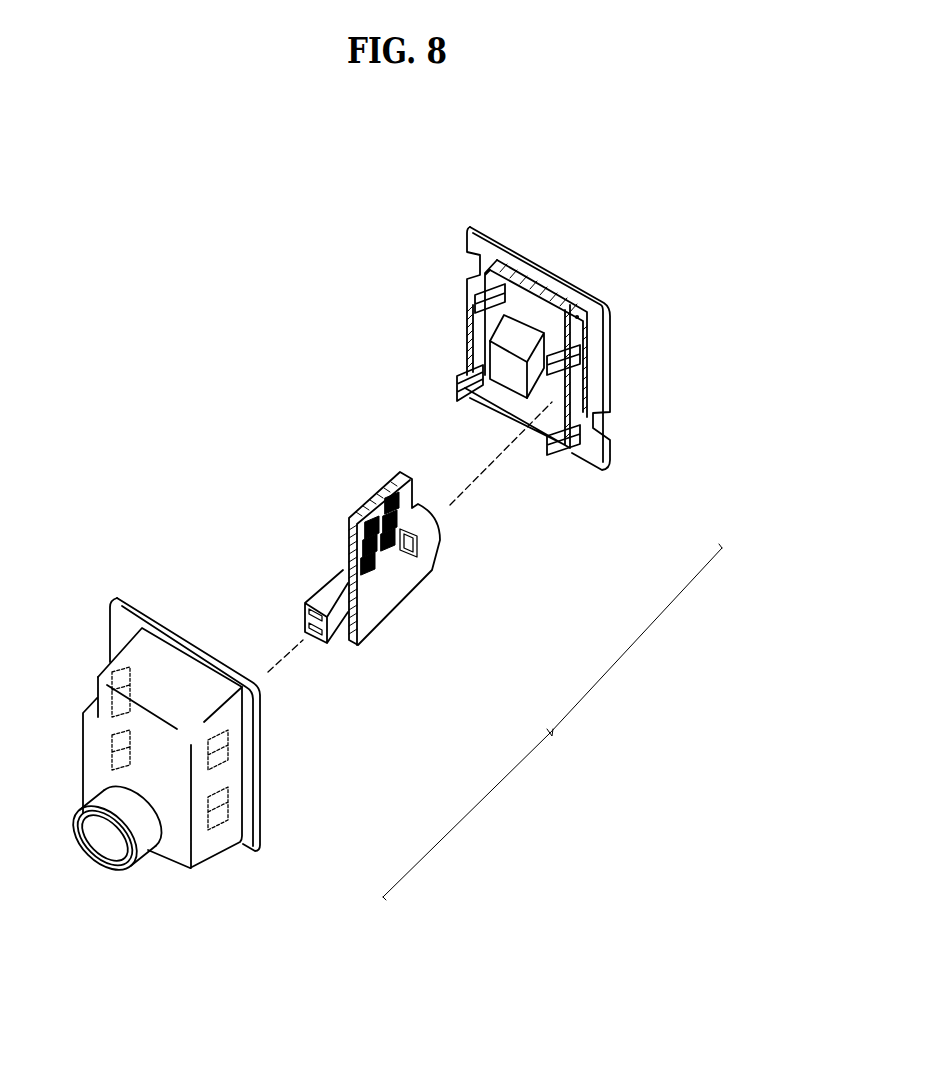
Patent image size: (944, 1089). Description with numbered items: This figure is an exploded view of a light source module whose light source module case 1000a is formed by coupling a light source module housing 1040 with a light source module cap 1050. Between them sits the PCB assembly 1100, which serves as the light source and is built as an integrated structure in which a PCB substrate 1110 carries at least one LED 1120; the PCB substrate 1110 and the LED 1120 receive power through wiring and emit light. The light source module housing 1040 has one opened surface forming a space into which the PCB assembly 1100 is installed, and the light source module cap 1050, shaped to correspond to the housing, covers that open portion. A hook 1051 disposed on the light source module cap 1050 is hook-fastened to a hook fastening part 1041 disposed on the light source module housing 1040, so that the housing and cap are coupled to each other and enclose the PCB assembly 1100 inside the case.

The light source module case 1000a is at (552, 722).
The light source module housing 1040 is at (267, 830).
The hook fastening part 1041 is at (215, 832).
The light source module cap 1050 is at (585, 384).
The hook 1051 is at (578, 360).
The PCB assembly 1100 is at (409, 567).
The PCB substrate 1110 is at (410, 575).
The LED 1120 is at (375, 486).